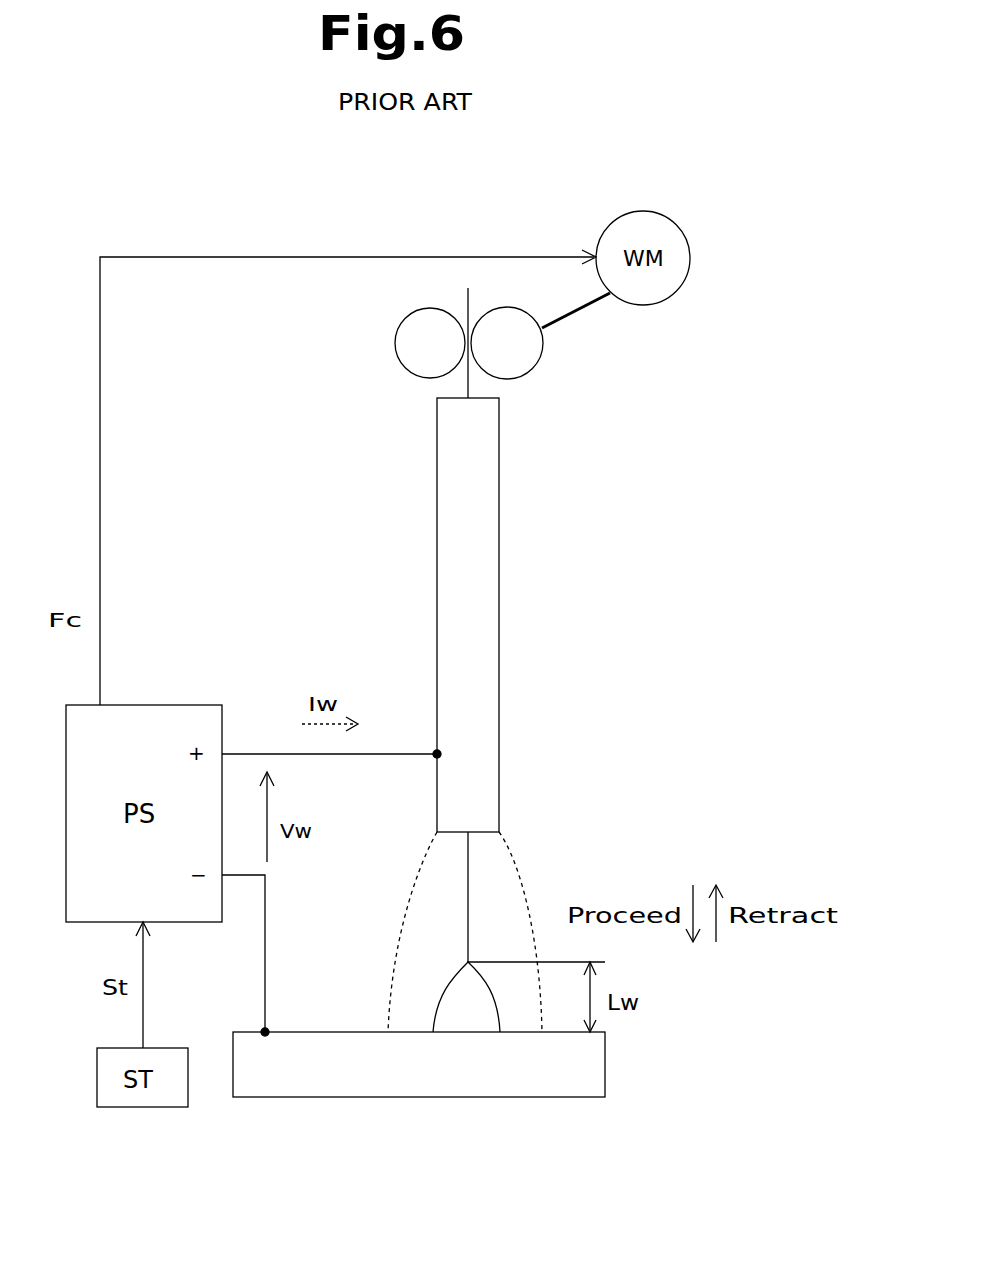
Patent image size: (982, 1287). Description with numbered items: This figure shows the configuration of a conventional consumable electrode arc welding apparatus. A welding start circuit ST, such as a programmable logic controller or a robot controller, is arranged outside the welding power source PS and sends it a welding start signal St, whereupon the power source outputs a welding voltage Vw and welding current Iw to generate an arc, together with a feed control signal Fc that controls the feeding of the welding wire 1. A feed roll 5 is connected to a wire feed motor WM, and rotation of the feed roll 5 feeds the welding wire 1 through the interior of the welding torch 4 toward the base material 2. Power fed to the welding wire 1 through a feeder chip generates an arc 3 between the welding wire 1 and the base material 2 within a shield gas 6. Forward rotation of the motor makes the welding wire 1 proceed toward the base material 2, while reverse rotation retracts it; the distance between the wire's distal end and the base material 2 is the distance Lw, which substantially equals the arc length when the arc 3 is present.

The welding wire 1 is at (472, 908).
The base material 2 is at (417, 1097).
The arc 3 is at (430, 1019).
The welding torch 4 is at (499, 617).
The feed roll 5 is at (485, 354).
The shield gas 6 is at (402, 925).